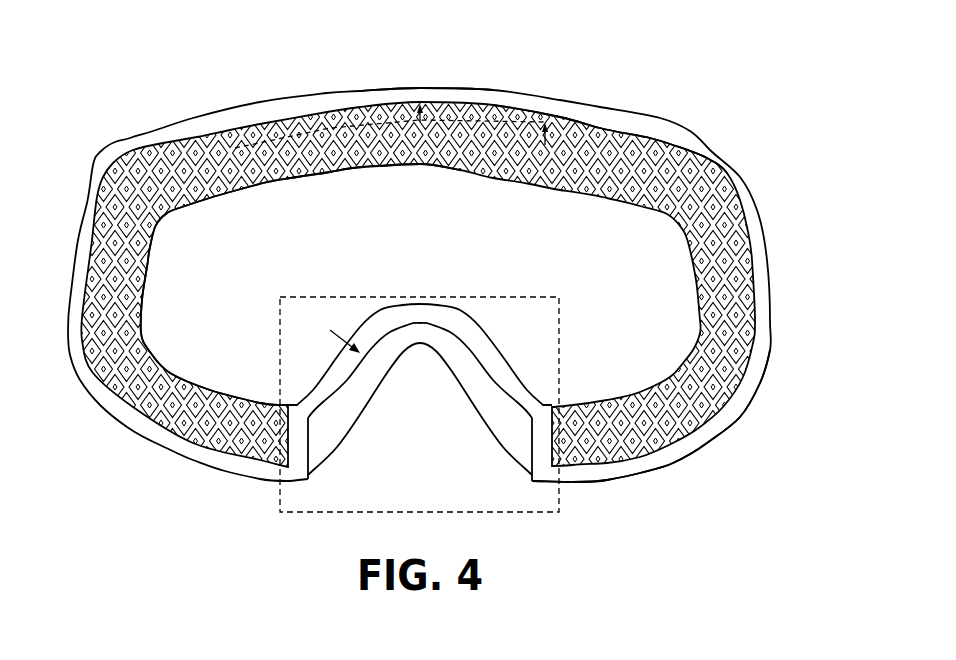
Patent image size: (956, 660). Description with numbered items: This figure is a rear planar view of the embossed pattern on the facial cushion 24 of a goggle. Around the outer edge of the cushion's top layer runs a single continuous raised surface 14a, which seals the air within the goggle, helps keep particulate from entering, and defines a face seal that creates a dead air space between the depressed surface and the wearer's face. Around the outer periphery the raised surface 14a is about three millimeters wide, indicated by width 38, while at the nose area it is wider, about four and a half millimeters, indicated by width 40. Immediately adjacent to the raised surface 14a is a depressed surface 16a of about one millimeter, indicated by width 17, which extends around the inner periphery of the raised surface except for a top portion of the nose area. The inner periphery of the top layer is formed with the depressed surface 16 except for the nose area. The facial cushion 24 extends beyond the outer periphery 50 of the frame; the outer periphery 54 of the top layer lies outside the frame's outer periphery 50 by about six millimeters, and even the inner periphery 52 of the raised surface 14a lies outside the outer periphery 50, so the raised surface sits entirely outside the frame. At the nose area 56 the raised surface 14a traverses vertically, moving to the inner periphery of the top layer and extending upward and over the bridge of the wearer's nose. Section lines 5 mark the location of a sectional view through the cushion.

The section line 5- 5 is at (170, 200).
The single continuous raised surface 14a is at (756, 243).
The depressed surface 16 is at (283, 184).
The depressed surface 16a is at (503, 112).
The width 17 is at (553, 108).
The facial cushion 24 is at (772, 432).
The width 38 is at (420, 78).
The width 40 is at (381, 366).
The outer periphery of the frame 50 is at (283, 130).
The inner periphery of the single continuous raised surface 52 is at (650, 138).
The outer periphery of the top layer 54 is at (627, 477).
The nose area 56 is at (548, 512).